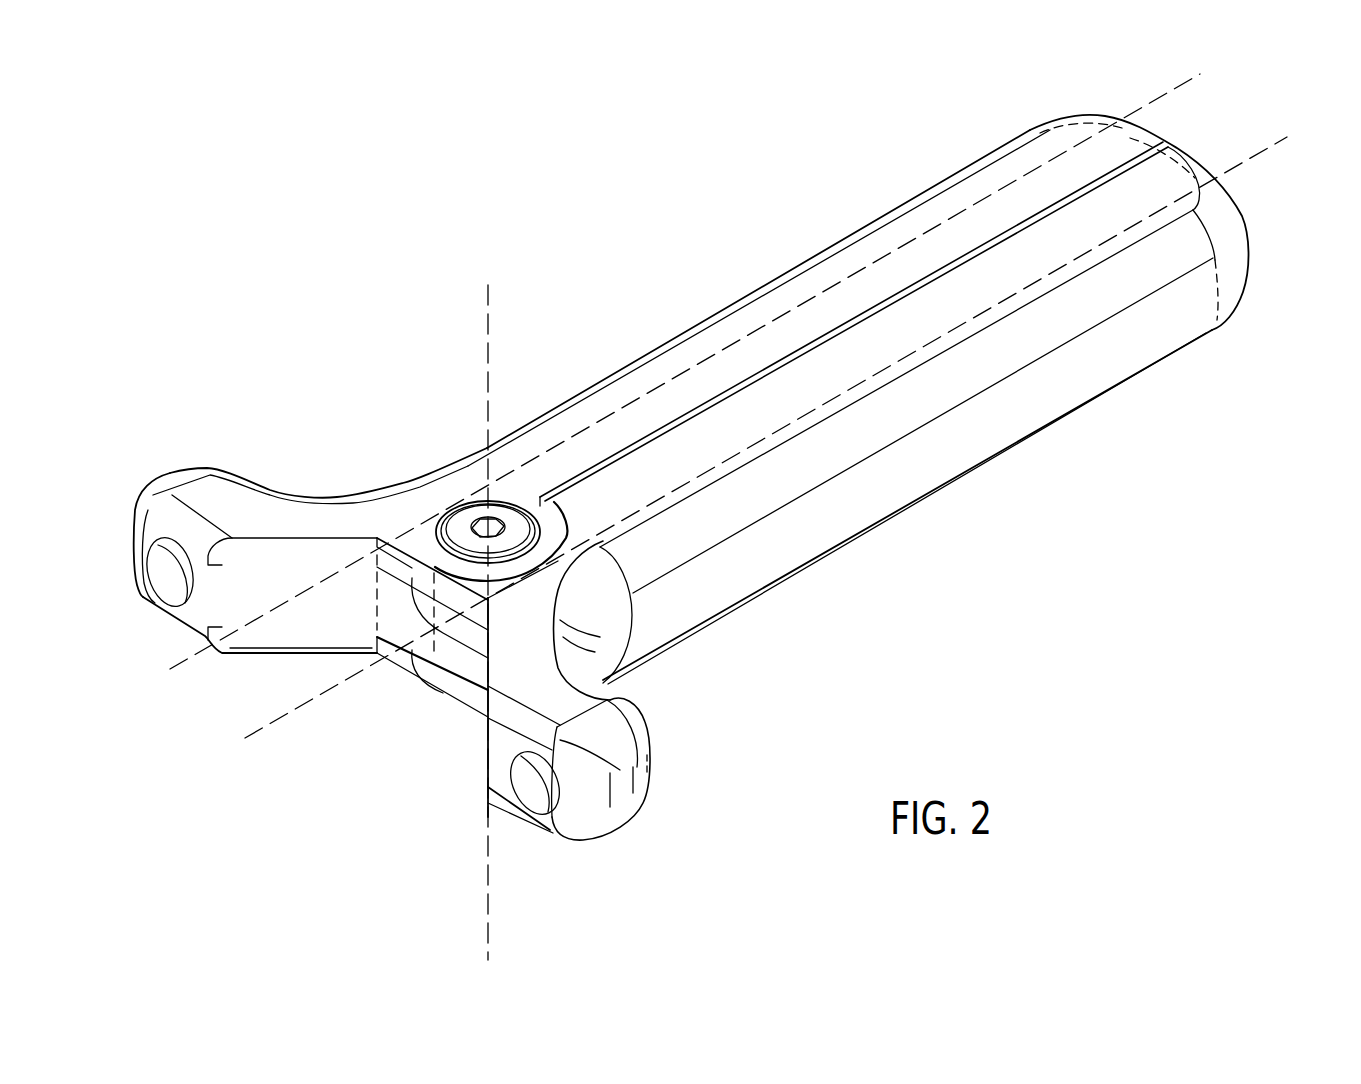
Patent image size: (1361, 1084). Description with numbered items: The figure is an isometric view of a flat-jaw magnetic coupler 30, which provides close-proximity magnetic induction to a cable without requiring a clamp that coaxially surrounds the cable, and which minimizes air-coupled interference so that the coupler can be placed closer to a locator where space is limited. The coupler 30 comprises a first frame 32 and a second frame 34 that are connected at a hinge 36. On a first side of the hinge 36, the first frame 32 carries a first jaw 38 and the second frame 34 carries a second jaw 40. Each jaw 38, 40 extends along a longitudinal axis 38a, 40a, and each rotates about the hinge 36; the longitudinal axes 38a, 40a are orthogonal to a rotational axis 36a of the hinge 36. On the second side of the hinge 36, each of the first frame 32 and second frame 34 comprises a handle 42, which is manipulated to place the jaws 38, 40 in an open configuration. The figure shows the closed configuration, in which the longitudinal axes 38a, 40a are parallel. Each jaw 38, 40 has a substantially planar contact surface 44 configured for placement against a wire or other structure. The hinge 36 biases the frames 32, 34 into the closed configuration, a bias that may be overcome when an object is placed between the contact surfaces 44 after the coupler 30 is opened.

The flat-jaw magnetic coupler 30 is at (590, 252).
The first frame 32 is at (808, 262).
The second frame 34 is at (642, 630).
The hinge 36 is at (480, 523).
The rotational axis 36a is at (488, 338).
The first jaw 38 is at (1037, 157).
The longitudinal axis 38a is at (1165, 92).
The second jaw 40 is at (1097, 300).
The longitudinal axis 40a is at (1247, 162).
The handle 42 is at (268, 648).
The contact surface 44 is at (983, 250).